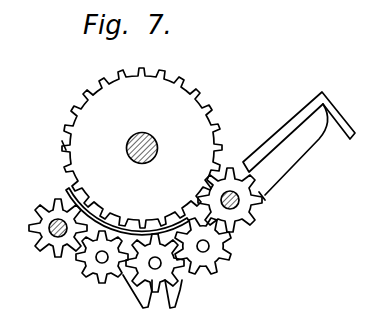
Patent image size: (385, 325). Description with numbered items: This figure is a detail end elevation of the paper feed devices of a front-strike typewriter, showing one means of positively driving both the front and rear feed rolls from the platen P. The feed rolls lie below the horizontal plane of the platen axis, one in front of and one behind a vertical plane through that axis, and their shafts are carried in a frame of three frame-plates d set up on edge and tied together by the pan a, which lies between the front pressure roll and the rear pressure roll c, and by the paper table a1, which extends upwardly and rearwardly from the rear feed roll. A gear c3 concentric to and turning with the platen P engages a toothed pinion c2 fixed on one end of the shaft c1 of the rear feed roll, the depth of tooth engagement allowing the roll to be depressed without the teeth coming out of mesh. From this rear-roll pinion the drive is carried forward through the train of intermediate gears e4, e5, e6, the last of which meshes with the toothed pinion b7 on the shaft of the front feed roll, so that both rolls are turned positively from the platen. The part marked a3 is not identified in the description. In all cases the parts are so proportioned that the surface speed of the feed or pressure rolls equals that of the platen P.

The platen P is at (70, 118).
The pan a is at (100, 229).
The paper table a1 is at (282, 126).
The curved guard segment a3 is at (68, 187).
The toothed pinion b7 is at (38, 250).
The rear pressure roll c is at (238, 168).
The shaft of the rear feed roll c1 is at (237, 207).
The toothed pinion c2 is at (263, 197).
The gear c3 is at (61, 147).
The frame-plates d is at (192, 280).
The intermediate gear e4 is at (210, 268).
The intermediate gear e5 is at (133, 283).
The intermediate gear e6 is at (88, 263).